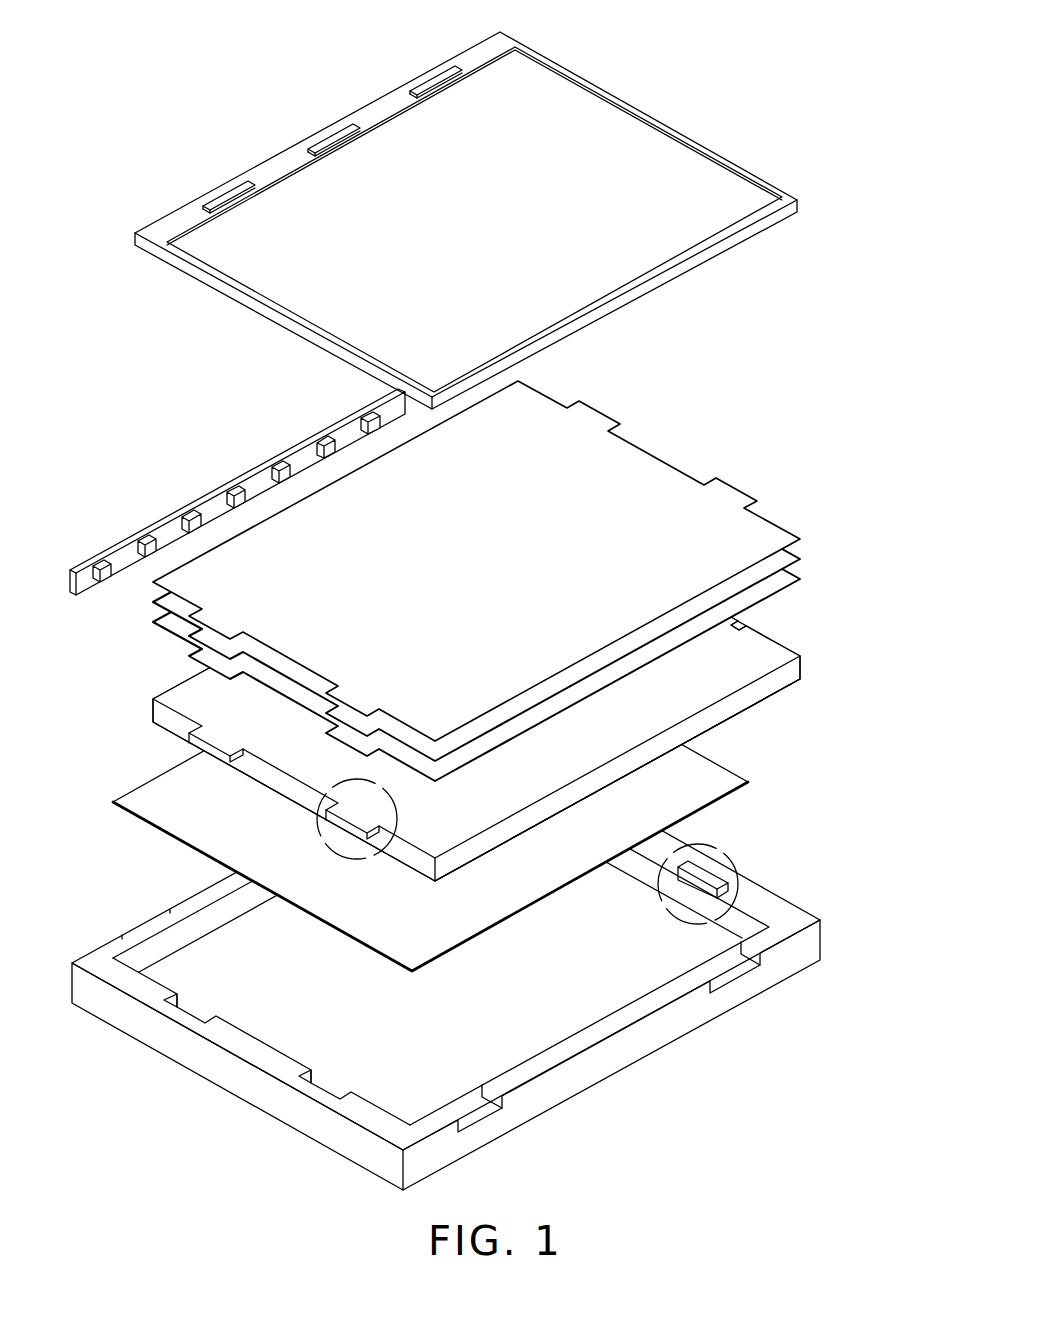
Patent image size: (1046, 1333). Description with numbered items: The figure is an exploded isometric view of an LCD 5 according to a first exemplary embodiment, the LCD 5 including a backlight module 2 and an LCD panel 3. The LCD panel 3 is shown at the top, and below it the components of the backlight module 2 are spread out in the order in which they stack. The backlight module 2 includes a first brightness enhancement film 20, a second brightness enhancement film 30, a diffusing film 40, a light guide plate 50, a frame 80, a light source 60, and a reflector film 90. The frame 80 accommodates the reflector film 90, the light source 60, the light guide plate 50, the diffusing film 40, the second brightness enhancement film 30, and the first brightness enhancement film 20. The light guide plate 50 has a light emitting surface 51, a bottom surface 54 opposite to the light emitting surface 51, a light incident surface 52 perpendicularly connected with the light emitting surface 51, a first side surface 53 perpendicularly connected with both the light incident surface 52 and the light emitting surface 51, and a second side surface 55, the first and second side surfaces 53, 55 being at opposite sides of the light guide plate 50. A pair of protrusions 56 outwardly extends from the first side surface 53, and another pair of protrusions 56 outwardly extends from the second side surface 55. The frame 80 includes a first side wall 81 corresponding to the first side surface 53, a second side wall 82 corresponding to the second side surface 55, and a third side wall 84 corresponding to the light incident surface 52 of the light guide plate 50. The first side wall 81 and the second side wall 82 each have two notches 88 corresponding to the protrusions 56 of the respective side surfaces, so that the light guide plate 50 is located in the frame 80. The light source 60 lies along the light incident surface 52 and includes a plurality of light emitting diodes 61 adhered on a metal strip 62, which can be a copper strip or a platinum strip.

The backlight module 2 is at (479, 785).
The LCD panel 3 is at (690, 160).
The LCD 5 is at (591, 36).
The first brightness enhancement film 20 is at (657, 487).
The second brightness enhancement film 30 is at (790, 552).
The diffusing film 40 is at (790, 577).
The light guide plate 50 is at (460, 689).
The light emitting surface 51 is at (460, 689).
The light incident surface 52 is at (158, 683).
The first side surface 53 is at (163, 713).
The bottom surface 54 is at (753, 712).
The second side surface 55 is at (767, 622).
The protrusions 56 is at (208, 737).
The light source 60 is at (237, 492).
The light emitting diodes 61 is at (236, 497).
The metal strip 62 is at (307, 455).
The frame 80 is at (457, 961).
The first side wall 81 is at (257, 1053).
The second side wall 82 is at (768, 900).
The third side wall 84 is at (212, 897).
The notches 88 is at (703, 878).
The reflector film 90 is at (737, 775).